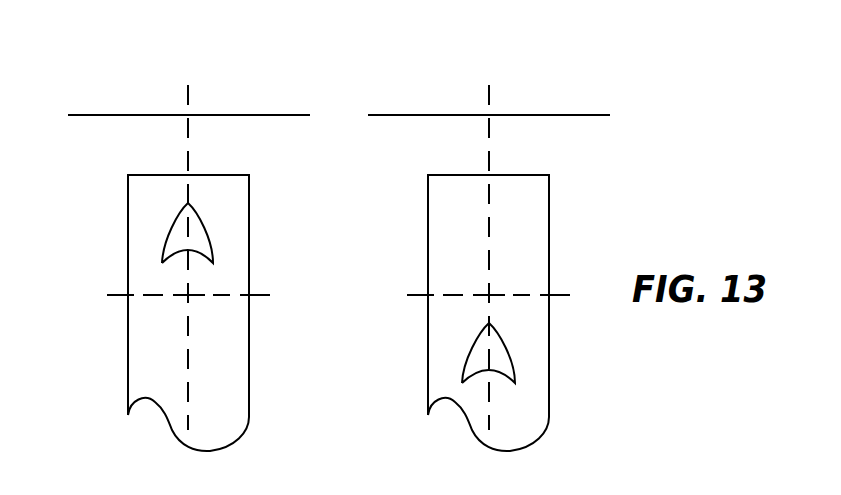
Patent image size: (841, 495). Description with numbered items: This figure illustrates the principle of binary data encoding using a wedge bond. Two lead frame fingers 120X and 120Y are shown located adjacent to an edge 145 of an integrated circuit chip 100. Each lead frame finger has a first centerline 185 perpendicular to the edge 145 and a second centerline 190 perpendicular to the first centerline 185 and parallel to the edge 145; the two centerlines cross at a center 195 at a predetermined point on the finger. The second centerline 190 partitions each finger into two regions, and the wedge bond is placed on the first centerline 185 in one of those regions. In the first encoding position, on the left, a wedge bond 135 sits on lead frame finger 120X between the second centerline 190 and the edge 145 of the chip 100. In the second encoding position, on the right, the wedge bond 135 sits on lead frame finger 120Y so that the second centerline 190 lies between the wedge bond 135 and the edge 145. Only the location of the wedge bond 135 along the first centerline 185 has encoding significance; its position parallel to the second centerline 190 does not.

The integrated circuit chip 100 is at (150, 102).
The edge 145 is at (92, 115).
The first centerline 185 is at (188, 164).
The second centerline 190 is at (113, 293).
The center 195 is at (188, 295).
The wedge bond 135 is at (200, 233).
The lead frame finger 120X is at (143, 368).
The lead frame finger 120Y is at (452, 368).